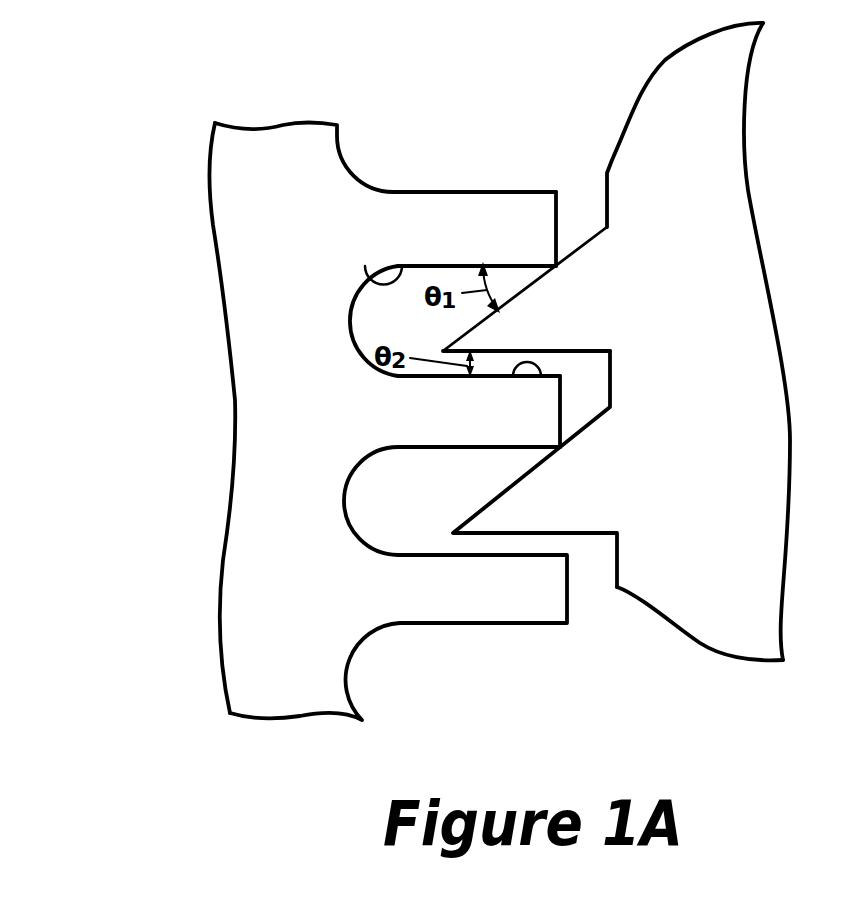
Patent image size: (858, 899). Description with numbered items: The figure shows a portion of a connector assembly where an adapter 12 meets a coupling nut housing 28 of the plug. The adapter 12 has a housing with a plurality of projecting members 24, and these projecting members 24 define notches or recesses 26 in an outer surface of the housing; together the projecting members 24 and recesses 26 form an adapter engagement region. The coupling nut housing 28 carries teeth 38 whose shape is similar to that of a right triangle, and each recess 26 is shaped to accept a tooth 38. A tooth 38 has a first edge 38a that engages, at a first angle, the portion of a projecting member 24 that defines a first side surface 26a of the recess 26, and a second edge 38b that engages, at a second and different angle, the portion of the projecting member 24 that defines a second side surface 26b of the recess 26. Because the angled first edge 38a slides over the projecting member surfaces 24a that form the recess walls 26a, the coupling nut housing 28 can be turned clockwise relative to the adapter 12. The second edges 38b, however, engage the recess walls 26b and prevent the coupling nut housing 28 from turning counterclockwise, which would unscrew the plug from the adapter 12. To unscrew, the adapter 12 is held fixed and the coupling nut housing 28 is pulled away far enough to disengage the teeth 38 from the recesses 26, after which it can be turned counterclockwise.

The adapter 12 is at (245, 302).
The projecting member 24 is at (480, 376).
The projecting member surface 24a is at (558, 264).
The recess 26 is at (420, 387).
The first side surface of recess 26a is at (365, 275).
The second side surface of recess 26b is at (514, 373).
The coupling nut housing 28 is at (725, 198).
The teeth 38 is at (579, 326).
The first edge of tooth 38a is at (593, 228).
The second edge of tooth 38b is at (585, 349).